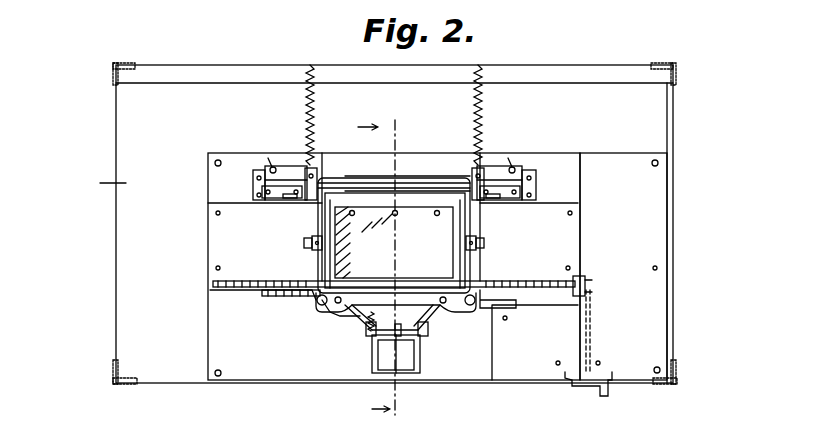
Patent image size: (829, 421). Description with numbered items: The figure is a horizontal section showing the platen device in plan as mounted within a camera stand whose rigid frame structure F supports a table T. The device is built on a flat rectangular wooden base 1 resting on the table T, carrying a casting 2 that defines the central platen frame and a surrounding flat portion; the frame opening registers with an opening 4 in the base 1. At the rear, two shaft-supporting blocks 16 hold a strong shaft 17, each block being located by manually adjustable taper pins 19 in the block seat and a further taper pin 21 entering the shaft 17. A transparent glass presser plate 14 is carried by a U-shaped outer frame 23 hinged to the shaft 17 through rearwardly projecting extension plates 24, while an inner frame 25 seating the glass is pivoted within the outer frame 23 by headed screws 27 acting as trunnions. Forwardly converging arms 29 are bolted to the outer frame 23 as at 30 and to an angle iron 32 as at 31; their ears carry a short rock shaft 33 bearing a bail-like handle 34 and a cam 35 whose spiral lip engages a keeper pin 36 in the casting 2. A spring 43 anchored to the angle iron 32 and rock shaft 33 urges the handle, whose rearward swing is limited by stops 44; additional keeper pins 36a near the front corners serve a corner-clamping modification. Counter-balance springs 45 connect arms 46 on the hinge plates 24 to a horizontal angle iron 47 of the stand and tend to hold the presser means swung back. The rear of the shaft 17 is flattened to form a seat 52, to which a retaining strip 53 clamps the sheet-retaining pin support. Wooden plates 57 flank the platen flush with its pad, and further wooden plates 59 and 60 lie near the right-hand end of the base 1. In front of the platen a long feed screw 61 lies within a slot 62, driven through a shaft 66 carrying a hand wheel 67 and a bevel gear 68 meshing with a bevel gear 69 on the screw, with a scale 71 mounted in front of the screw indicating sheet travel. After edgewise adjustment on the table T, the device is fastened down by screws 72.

The wooden base 1 is at (200, 178).
The casting 2 is at (350, 318).
The opening 4 is at (374, 267).
The glass presser plate 14 is at (358, 210).
The shaft-supporting block 16 is at (286, 168).
The shaft 17 is at (418, 190).
The taper pin 19 is at (270, 165).
The taper pin 21 is at (258, 200).
The outer frame 23 is at (312, 240).
The extension plate 24 is at (314, 206).
The frame 25 is at (324, 262).
The headed screw 27 is at (304, 246).
The arm 29 is at (360, 326).
The bolting 30 is at (262, 290).
The bolting 31 is at (345, 300).
The angle iron 32 is at (378, 270).
The rock shaft 33 is at (372, 335).
The bail-like handle 34 is at (408, 368).
The cam 35 is at (420, 345).
The keeper pin 36 is at (356, 316).
The keeper pin 36a is at (498, 340).
The spring 43 is at (380, 302).
The stop 44 is at (410, 320).
The counter-balance spring 45 is at (306, 100).
The arm 46 is at (318, 180).
The angle iron 47 is at (318, 76).
The seat 52 is at (400, 214).
The retaining strip 53 is at (400, 182).
The plate 57 is at (210, 266).
The wooden plate 59 is at (668, 222).
The wooden plate 60 is at (548, 362).
The feed screw 61 is at (546, 290).
The slot 62 is at (560, 300).
The shaft 66 is at (592, 336).
The hand wheel 67 is at (594, 387).
The bevel gear 68 is at (590, 290).
The bevel gear 69 is at (590, 282).
The scale 71 is at (256, 296).
The screw 72 is at (214, 163).
The frame structure F is at (673, 74).
The table T is at (101, 184).